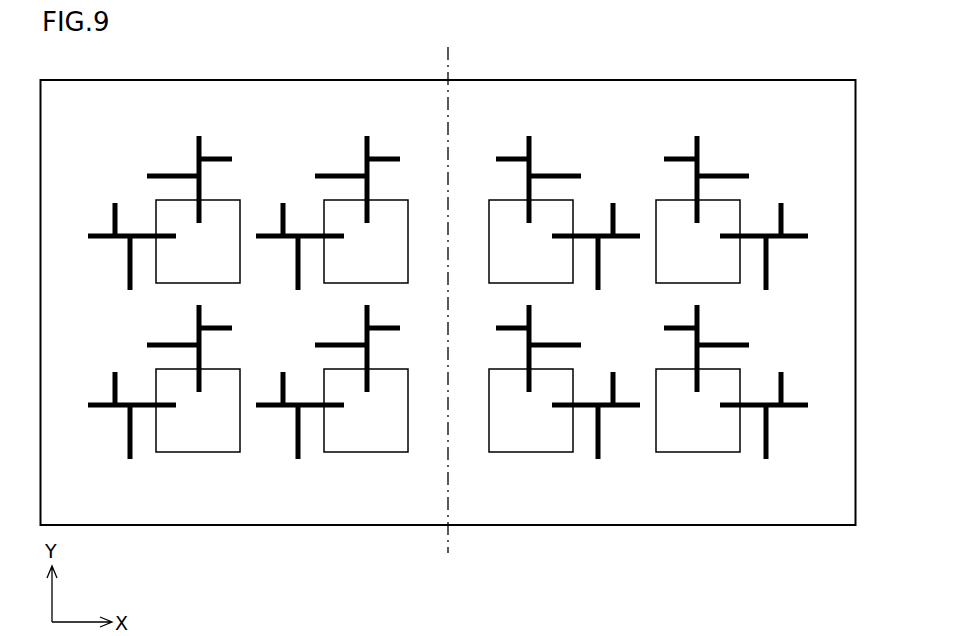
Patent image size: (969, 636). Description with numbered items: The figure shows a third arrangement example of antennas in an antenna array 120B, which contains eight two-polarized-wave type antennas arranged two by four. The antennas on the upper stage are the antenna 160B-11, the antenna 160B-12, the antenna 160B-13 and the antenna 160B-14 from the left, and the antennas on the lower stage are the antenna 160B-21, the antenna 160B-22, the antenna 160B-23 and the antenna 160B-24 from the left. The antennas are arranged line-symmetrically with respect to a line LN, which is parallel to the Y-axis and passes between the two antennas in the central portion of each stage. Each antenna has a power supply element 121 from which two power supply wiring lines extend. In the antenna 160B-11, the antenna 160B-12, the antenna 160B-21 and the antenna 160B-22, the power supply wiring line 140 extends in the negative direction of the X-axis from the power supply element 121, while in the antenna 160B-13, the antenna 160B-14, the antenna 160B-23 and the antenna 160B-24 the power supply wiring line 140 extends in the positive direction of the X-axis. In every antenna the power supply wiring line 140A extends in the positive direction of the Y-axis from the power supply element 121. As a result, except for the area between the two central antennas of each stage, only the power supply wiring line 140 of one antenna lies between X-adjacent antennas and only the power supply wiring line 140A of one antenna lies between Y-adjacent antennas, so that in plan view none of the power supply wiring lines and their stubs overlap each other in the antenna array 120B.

The antenna array 120B is at (778, 79).
The line LN is at (447, 288).
The power supply element 121 is at (217, 200).
The power supply wiring line 140 is at (98, 242).
The power supply wiring line 140A is at (201, 146).
The antenna 160B-11 is at (130, 181).
The antenna 160B-12 is at (299, 181).
The antenna 160B-13 is at (597, 181).
The antenna 160B-14 is at (765, 181).
The antenna 160B-21 is at (179, 468).
The antenna 160B-22 is at (347, 468).
The antenna 160B-23 is at (550, 468).
The antenna 160B-24 is at (718, 468).